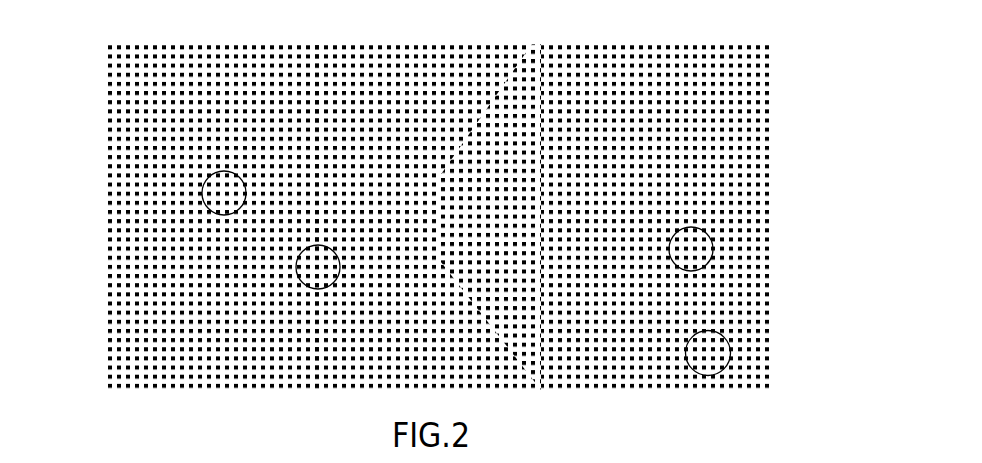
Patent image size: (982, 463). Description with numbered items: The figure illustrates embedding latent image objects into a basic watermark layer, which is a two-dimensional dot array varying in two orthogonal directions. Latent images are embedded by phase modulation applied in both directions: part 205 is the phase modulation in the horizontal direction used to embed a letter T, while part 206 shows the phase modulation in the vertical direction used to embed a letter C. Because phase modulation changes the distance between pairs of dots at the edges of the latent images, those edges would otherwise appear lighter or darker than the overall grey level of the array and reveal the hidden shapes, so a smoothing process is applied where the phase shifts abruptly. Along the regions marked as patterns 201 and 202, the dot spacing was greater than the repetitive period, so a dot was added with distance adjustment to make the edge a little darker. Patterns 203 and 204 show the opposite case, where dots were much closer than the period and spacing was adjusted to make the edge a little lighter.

The compensated edge pattern 201 is at (205, 204).
The compensated edge pattern 202 is at (712, 244).
The adjusted edge pattern 203 is at (297, 272).
The adjusted edge pattern 204 is at (730, 347).
The horizontal phase modulation part 205 is at (297, 230).
The vertical phase modulation part 206 is at (520, 229).